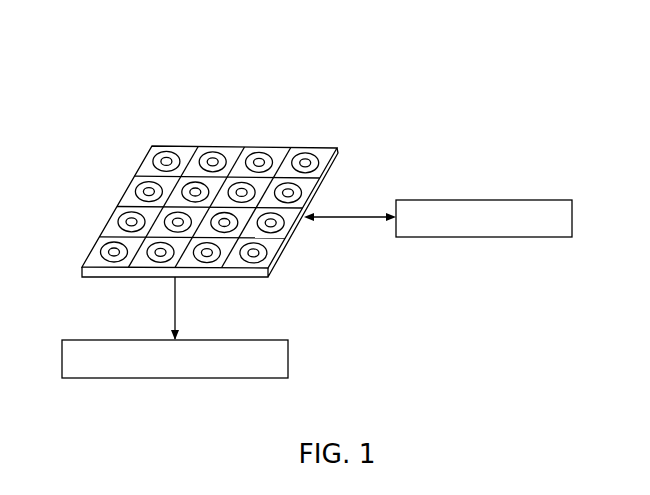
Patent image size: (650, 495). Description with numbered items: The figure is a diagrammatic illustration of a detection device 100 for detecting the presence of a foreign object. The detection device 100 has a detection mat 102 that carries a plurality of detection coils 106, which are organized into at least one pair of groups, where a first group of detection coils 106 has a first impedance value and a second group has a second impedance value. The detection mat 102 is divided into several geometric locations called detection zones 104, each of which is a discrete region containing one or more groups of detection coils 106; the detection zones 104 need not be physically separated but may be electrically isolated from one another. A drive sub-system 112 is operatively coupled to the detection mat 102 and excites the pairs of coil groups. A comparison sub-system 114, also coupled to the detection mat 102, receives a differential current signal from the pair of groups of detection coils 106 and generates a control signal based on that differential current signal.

The detection device 100 is at (546, 67).
The detection mat 102 is at (167, 146).
The detection zones 104 is at (301, 151).
The detection coils 106 is at (321, 182).
The drive sub-system 112 is at (573, 215).
The comparison sub-system 114 is at (290, 358).